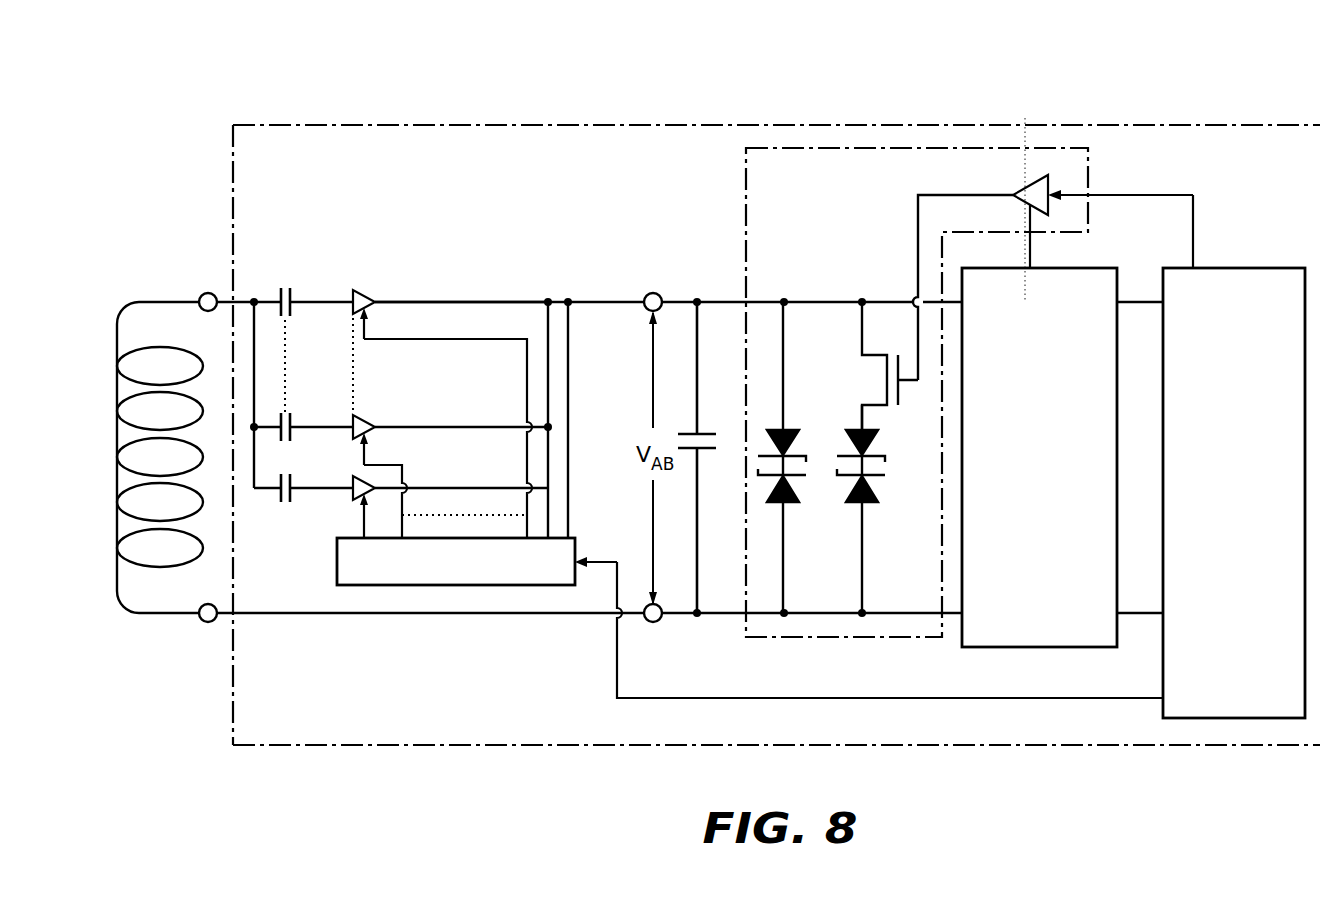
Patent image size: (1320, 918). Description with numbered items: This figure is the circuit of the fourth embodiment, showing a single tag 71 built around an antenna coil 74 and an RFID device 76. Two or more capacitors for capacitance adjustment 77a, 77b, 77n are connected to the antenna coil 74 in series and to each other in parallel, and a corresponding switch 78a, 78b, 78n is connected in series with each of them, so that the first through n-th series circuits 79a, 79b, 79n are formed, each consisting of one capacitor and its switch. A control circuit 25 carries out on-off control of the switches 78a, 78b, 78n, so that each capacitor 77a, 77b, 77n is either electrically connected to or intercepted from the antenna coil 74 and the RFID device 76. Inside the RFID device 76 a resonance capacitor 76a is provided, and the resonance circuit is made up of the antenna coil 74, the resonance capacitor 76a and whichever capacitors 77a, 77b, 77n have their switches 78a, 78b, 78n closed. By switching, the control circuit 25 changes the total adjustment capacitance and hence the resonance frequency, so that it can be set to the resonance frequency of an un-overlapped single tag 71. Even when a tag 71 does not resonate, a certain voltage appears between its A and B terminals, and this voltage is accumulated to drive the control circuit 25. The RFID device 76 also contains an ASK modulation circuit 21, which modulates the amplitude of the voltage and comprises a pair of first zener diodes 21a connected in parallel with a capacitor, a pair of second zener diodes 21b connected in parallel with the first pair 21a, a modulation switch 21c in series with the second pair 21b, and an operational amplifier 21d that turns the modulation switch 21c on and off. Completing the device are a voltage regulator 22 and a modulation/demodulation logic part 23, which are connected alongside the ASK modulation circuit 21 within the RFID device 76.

The tag 71 is at (262, 106).
The RFID device 76 is at (722, 120).
The antenna coil 74 is at (117, 330).
The capacitor for capacitance adjustment 77n is at (293, 290).
The capacitor for capacitance adjustment 77b is at (293, 423).
The capacitor for capacitance adjustment 77a is at (282, 503).
The switch 78n is at (366, 292).
The switch 78b is at (365, 418).
The switch 78a is at (358, 500).
The n-th series circuit 79n is at (457, 302).
The series circuit 79b is at (462, 427).
The first series circuit 79a is at (440, 488).
The control circuit 25 is at (337, 565).
The resonance capacitor 76a is at (706, 433).
The ASK modulation circuit 21 is at (734, 197).
The first zener diode 21a is at (796, 450).
The second zener diode 21b is at (876, 450).
The modulation switch 21c is at (886, 382).
The operational amplifier 21d is at (1030, 184).
The voltage regulator 22 is at (1030, 648).
The modulation/demodulation logic part 23 is at (1235, 719).